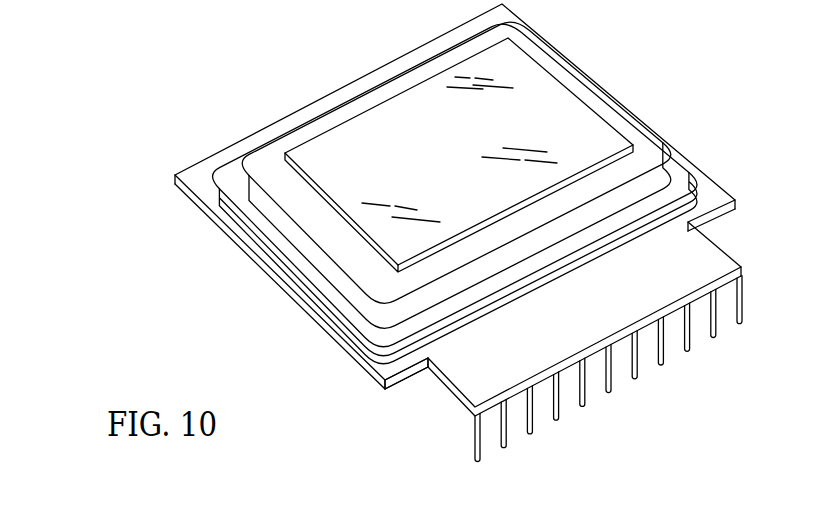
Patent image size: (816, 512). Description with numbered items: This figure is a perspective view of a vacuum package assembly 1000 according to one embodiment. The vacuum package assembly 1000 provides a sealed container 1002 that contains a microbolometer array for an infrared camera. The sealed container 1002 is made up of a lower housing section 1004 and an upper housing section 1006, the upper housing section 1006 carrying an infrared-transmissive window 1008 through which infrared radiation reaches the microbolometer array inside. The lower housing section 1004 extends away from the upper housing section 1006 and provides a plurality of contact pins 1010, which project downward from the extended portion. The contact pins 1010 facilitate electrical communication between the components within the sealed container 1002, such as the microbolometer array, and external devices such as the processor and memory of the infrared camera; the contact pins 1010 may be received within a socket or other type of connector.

The vacuum package assembly 1000 is at (391, 233).
The sealed container 1002 is at (590, 90).
The lower housing section 1004 is at (468, 382).
The upper housing section 1006 is at (298, 235).
The infrared-transmissive window 1008 is at (392, 115).
The contact pins 1010 is at (621, 412).